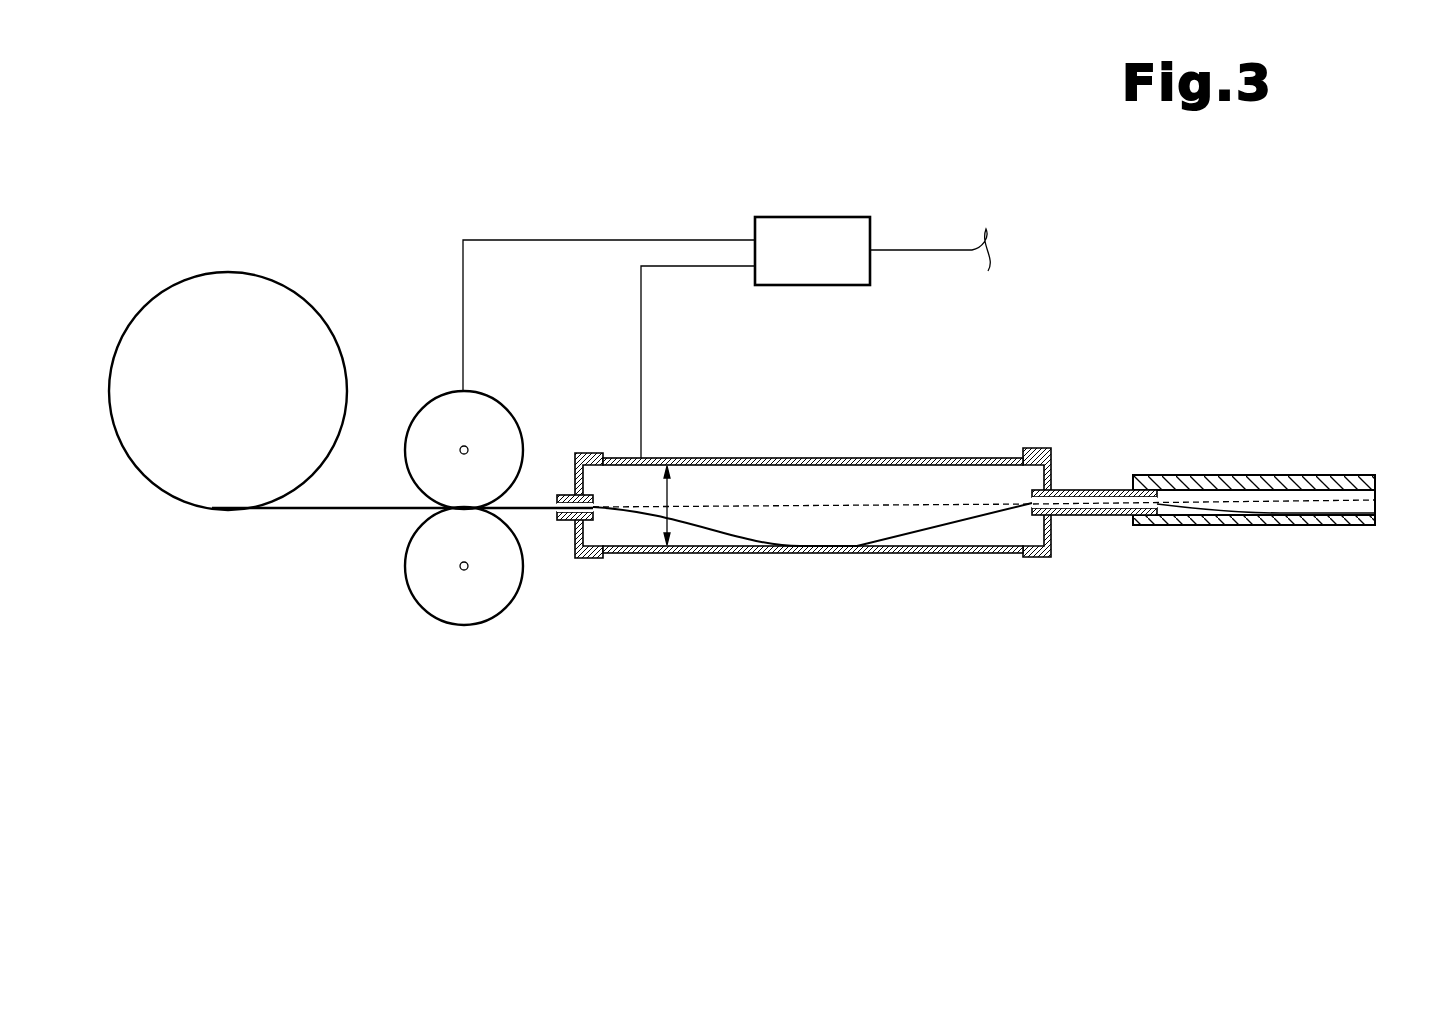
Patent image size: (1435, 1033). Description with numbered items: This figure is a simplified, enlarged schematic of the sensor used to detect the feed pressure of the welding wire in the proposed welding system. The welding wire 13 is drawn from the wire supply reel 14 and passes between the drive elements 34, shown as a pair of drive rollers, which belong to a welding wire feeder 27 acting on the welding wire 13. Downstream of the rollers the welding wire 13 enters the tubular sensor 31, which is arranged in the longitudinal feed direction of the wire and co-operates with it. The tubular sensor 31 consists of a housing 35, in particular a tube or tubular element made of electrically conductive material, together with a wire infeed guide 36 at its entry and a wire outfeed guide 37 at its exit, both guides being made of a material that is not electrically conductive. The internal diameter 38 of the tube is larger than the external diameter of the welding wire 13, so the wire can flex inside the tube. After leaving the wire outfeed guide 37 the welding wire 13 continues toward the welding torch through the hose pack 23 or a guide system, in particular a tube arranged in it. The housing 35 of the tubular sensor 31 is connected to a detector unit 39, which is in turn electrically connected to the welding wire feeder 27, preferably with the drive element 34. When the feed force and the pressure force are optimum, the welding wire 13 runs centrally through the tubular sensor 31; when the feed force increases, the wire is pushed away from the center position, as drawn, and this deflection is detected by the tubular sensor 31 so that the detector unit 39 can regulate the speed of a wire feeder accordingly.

The welding wire 13 is at (342, 511).
The wire supply reel 14 is at (198, 470).
The hose pack 23 is at (1263, 435).
The welding wire feeder 27 is at (531, 464).
The tubular sensor 31 is at (813, 536).
The drive element 34 is at (444, 427).
The housing 35 is at (850, 457).
The wire infeed guide 36 is at (556, 548).
The wire outfeed guide 37 is at (1088, 545).
The internal diameter 38 is at (676, 497).
The detector unit 39 is at (800, 240).